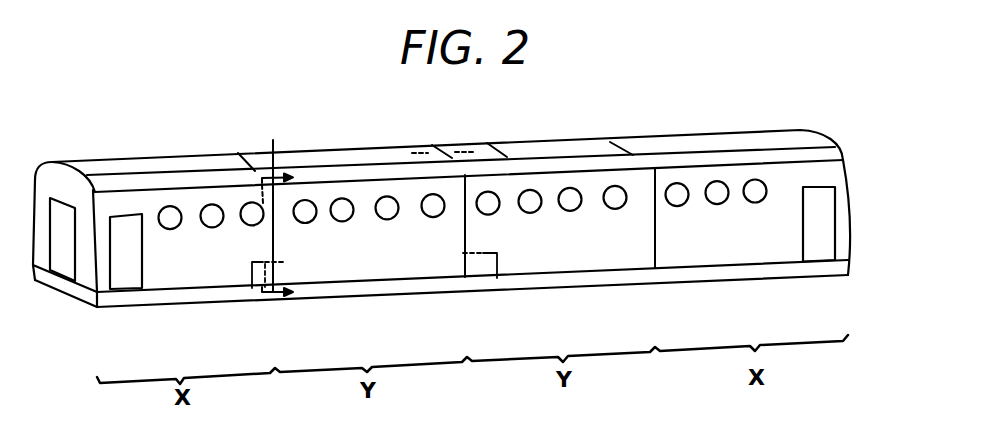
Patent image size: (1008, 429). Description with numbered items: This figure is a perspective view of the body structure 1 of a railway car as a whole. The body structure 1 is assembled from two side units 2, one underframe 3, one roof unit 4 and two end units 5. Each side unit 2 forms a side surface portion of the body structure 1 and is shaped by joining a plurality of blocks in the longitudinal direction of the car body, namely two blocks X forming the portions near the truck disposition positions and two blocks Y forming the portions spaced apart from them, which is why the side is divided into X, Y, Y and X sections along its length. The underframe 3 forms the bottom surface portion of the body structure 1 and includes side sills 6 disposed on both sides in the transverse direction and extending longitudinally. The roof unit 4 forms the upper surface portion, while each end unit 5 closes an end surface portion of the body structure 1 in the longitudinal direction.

The body structure 1 is at (737, 248).
The side unit 2 is at (680, 246).
The underframe 3 is at (173, 332).
The roof unit 4 is at (273, 140).
The end unit 5 is at (50, 173).
The side sill 6 is at (585, 278).